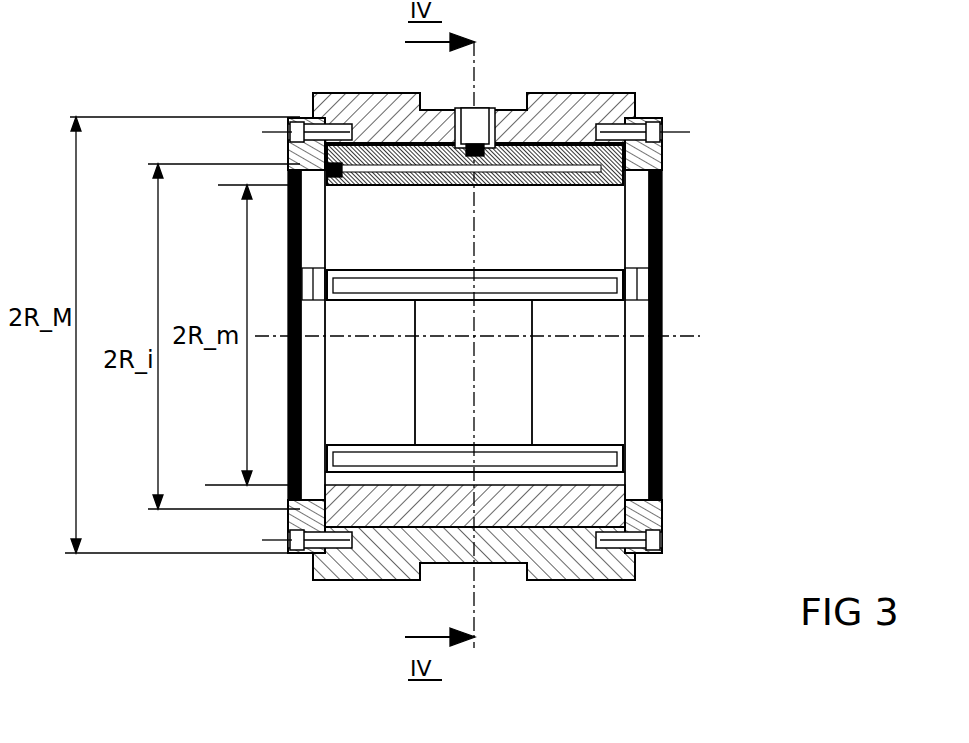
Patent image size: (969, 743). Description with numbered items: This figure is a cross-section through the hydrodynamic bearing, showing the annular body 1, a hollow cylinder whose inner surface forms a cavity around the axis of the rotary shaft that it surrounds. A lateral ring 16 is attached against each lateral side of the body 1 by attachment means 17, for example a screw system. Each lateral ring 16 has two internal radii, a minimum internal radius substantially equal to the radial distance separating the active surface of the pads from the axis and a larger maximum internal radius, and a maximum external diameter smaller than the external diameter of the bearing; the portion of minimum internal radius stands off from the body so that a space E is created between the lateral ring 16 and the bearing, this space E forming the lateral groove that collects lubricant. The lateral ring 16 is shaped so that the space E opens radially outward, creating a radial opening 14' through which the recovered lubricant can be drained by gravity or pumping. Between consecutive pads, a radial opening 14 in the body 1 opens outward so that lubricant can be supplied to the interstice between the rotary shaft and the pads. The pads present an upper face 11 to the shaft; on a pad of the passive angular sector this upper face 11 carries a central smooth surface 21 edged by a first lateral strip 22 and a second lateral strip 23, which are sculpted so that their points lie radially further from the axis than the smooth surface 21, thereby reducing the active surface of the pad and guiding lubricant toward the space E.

The annular body 1 is at (348, 570).
The upper face 11 is at (547, 389).
The radial opening 14 is at (452, 92).
The radial opening 14' is at (585, 263).
The lateral ring 16 is at (645, 157).
The attachment means 17 is at (660, 541).
The smooth surface 21 is at (512, 346).
The first lateral strip 22 is at (370, 372).
The second lateral strip 23 is at (578, 372).
The space E is at (634, 183).